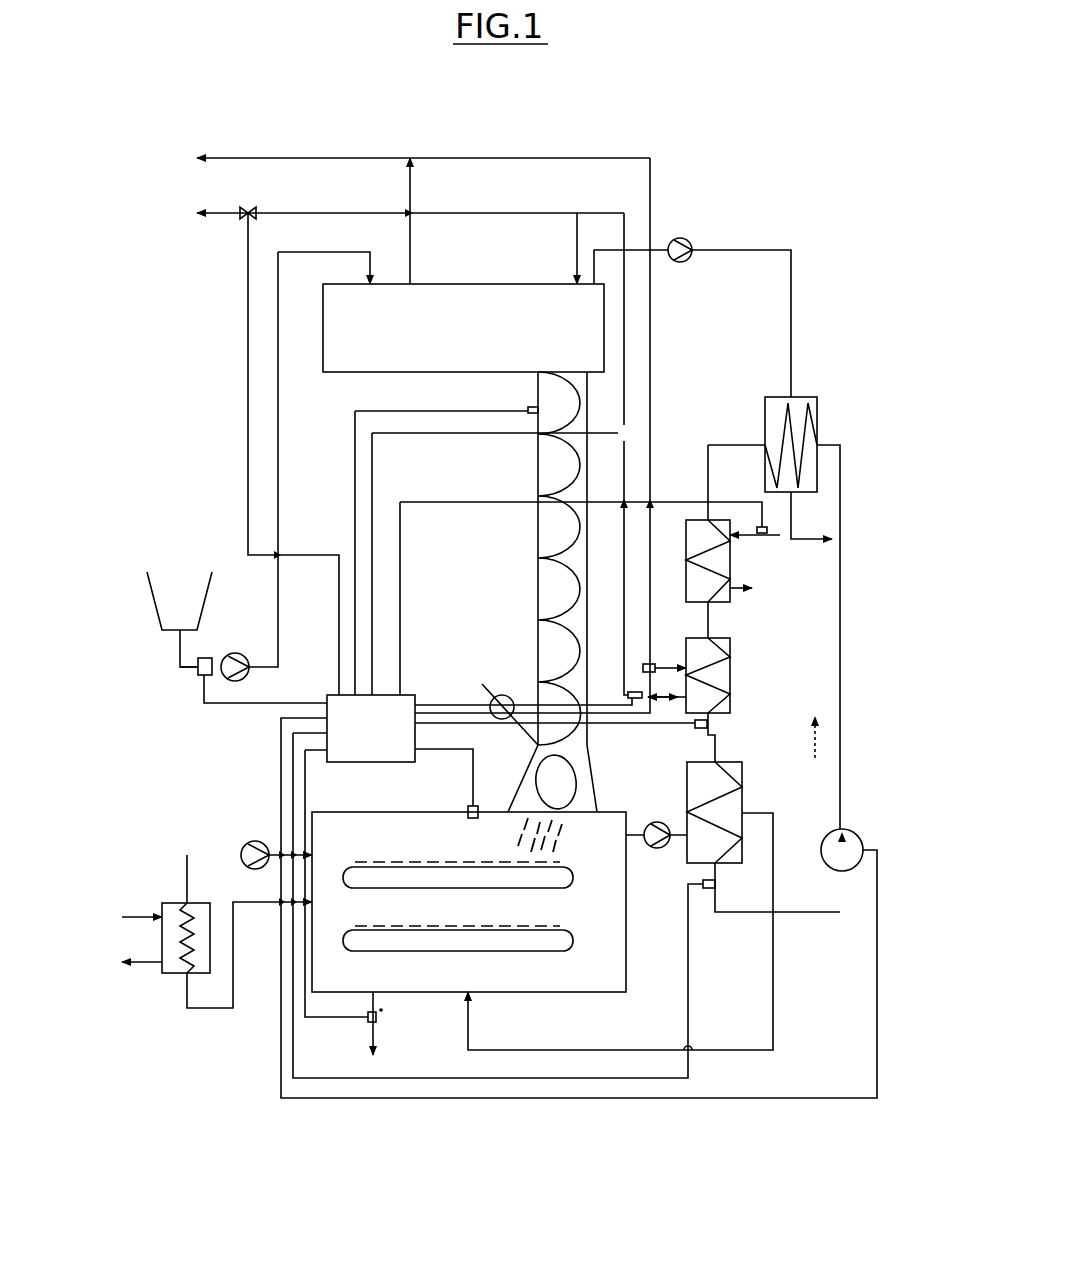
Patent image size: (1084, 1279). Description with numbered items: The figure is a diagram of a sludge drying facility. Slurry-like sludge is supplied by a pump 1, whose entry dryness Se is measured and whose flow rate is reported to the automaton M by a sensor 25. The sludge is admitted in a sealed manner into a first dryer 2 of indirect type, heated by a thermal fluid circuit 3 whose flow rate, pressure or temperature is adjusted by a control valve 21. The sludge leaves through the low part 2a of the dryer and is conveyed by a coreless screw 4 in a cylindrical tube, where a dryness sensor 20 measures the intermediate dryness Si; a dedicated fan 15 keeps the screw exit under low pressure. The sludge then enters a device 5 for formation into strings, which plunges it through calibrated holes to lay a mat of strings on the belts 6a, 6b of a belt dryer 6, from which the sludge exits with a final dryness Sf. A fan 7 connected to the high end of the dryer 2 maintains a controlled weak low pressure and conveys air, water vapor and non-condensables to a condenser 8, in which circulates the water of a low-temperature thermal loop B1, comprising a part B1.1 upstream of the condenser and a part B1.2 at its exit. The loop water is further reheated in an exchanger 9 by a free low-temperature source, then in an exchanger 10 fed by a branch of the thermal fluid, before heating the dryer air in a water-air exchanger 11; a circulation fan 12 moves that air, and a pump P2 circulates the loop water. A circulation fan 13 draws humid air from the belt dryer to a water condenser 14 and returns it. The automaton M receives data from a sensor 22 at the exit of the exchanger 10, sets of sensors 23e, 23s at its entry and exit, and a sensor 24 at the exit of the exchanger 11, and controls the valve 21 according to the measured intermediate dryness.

The pump 1 is at (237, 652).
The first dryer 2 is at (462, 284).
The low part of the dryer 2a is at (575, 371).
The thermal fluid circuit 3 is at (213, 225).
The screw 4 is at (536, 590).
The device for formation into strings 5 is at (524, 779).
The belt dryer 6 is at (369, 811).
The belt 6a is at (396, 865).
The belt 6b is at (446, 928).
The fan 7 is at (686, 240).
The condenser 8 is at (806, 396).
The exchanger 9 is at (735, 568).
The exchanger 10 is at (732, 676).
The water-air exchanger 11 is at (744, 789).
The circulation fan 12 is at (648, 823).
The circulation fan 13 is at (256, 841).
The water condenser 14 is at (171, 902).
The dedicated fan 15 is at (500, 695).
The dryness sensor 20 is at (532, 413).
The control valve 21 is at (250, 208).
The sensor 22 is at (692, 730).
The set of sensors 23s is at (640, 660).
The set of sensors 23e is at (626, 690).
The sensor 24 is at (702, 873).
The sensor 25 is at (207, 657).
The automaton M is at (394, 716).
The entry dryness Se is at (188, 681).
The intermediate dryness Si is at (446, 398).
The final dryness Sf is at (386, 1025).
The low-temperature thermal loop B1 is at (836, 440).
The low-temperature part of the loop B1.1 is at (834, 678).
The average-temperature part of the loop B1.2 is at (707, 478).
The pump P2 is at (860, 836).